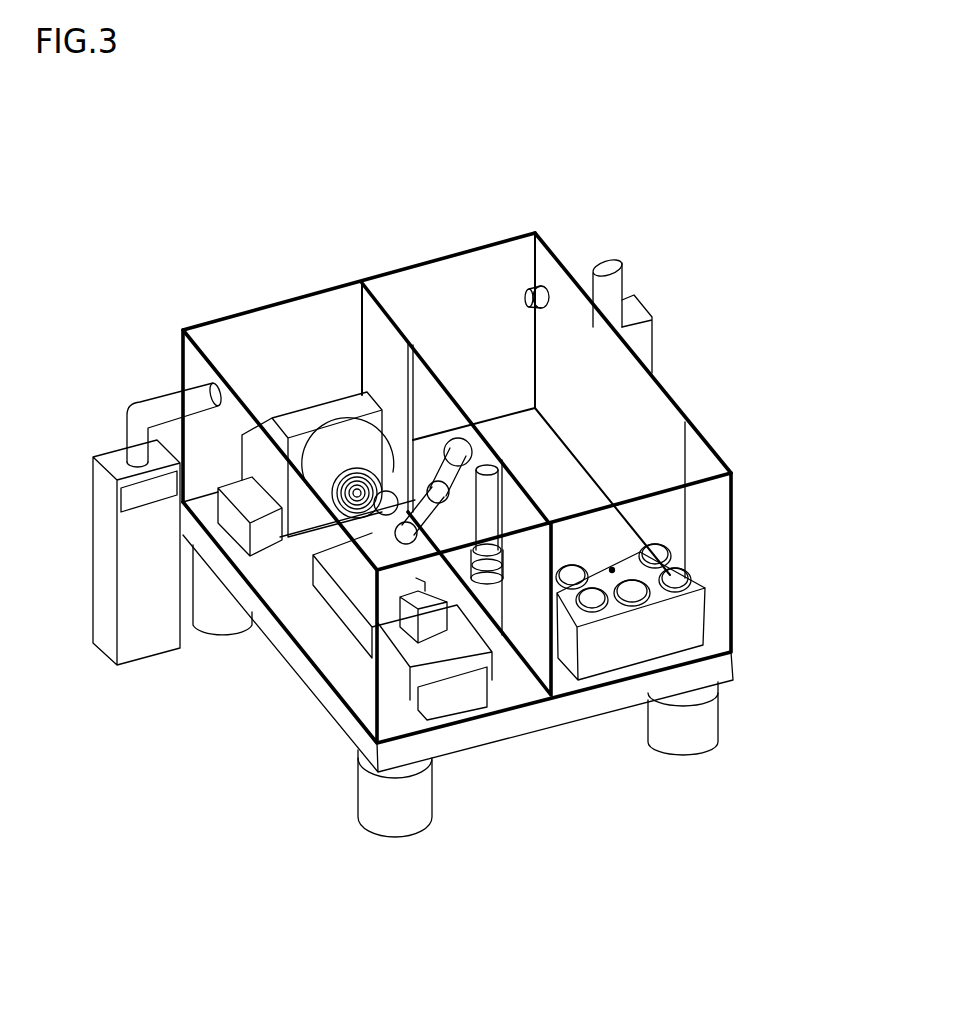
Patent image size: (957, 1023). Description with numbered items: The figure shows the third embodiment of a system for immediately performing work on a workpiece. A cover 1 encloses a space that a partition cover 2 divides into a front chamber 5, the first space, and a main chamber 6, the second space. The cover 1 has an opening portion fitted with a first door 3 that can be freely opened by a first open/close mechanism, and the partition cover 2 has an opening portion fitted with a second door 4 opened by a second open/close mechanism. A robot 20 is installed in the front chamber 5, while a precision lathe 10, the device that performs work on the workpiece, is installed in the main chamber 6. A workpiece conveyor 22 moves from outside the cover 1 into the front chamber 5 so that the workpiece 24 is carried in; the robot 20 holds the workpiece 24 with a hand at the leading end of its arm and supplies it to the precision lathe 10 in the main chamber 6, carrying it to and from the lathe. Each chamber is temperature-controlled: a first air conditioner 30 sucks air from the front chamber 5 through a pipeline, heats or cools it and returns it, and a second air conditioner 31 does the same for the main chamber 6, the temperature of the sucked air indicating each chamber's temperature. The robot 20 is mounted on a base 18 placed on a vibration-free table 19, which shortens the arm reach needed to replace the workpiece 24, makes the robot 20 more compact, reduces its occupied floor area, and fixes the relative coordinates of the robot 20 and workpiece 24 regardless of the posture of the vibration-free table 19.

The cover 1 is at (182, 331).
The partition cover 2 is at (540, 633).
The first door 3 is at (698, 473).
The second door 4 is at (410, 397).
The front chamber 5 is at (464, 272).
The main chamber 6 is at (260, 333).
The precision lathe 10 is at (357, 572).
The base 18 is at (468, 735).
The vibration-free table 19 is at (425, 797).
The robot 20 is at (457, 445).
The workpiece conveyor 22 is at (697, 609).
The workpiece 24 is at (640, 592).
The first air conditioner 30 is at (635, 318).
The second air conditioner 31 is at (117, 453).